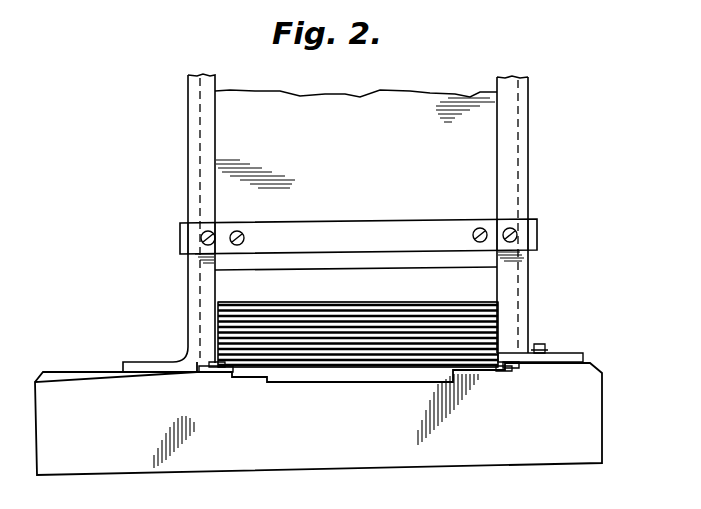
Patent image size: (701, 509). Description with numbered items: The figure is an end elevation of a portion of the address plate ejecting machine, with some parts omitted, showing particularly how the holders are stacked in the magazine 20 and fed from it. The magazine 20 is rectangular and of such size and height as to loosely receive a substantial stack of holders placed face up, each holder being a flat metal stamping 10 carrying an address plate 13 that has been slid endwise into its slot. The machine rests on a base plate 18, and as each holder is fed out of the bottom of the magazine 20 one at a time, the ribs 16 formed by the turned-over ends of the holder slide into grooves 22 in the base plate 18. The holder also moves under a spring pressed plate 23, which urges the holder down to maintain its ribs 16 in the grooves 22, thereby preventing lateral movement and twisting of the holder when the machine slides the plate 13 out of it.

The flat metal stamping 10 is at (400, 318).
The plate 13 is at (322, 306).
The ribs 16 is at (215, 368).
The base plate 18 is at (68, 388).
The magazine 20 is at (215, 135).
The grooves 22 is at (200, 373).
The spring pressed plate 23 is at (566, 358).